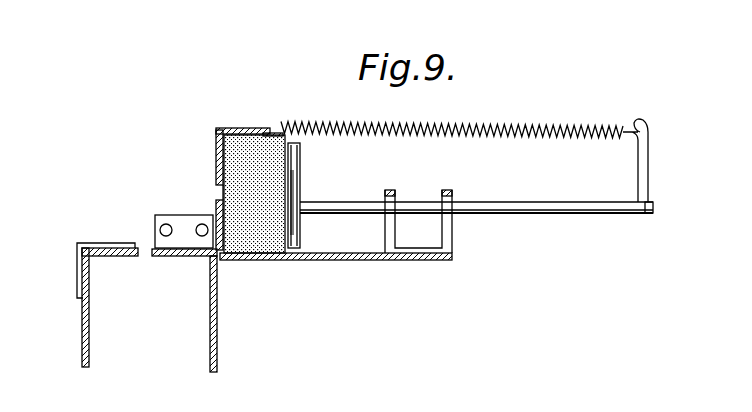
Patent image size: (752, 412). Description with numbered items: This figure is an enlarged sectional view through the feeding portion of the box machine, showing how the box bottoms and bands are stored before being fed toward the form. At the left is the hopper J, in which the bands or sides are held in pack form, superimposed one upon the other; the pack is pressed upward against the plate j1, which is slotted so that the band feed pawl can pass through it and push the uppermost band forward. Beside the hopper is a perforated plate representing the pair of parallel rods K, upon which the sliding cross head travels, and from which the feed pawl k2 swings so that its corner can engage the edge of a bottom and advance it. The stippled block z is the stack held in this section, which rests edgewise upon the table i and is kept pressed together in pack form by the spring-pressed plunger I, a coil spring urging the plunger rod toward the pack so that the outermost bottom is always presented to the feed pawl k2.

The hopper J is at (86, 355).
The plate j1 is at (107, 248).
The pair of parallel rods K is at (199, 224).
The feed pawl k2 is at (214, 207).
The block z is at (247, 177).
The table i is at (313, 253).
The spring-pressed plunger I is at (485, 208).